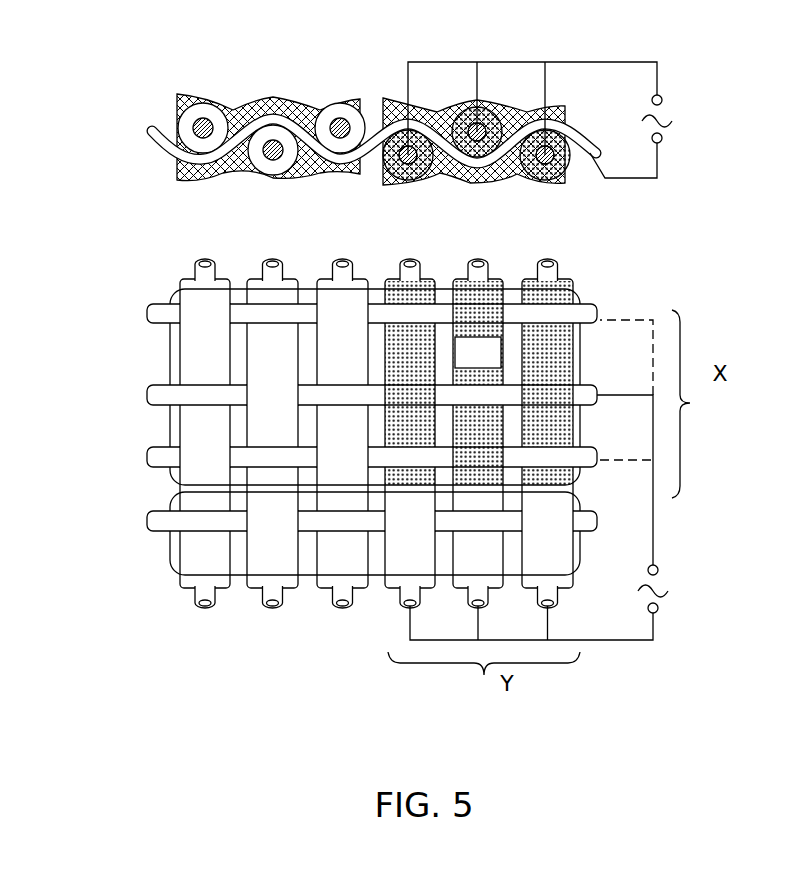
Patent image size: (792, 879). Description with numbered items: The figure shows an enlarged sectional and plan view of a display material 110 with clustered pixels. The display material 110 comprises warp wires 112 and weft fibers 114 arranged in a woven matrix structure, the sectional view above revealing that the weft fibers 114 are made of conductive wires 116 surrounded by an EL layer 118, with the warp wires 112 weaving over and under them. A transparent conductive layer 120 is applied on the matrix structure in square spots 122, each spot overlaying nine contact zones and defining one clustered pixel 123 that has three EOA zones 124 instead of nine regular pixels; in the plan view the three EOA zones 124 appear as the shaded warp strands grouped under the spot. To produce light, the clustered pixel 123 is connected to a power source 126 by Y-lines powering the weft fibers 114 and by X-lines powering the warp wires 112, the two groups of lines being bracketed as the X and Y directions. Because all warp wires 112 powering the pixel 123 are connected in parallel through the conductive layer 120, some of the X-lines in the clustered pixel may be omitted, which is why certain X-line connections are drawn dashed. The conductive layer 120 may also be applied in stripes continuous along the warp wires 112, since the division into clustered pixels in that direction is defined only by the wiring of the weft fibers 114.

The display material 110 is at (405, 395).
The warp wires 112 is at (152, 128).
The weft fibers 114 is at (332, 628).
The conductive wires 116 is at (268, 152).
The EL layer 118 is at (283, 168).
The transparent conductive layer 120 is at (392, 100).
The square spots 122 is at (575, 295).
The clustered pixel 123 is at (478, 352).
The EOA zones 124 is at (403, 433).
The power source 126 is at (628, 298).